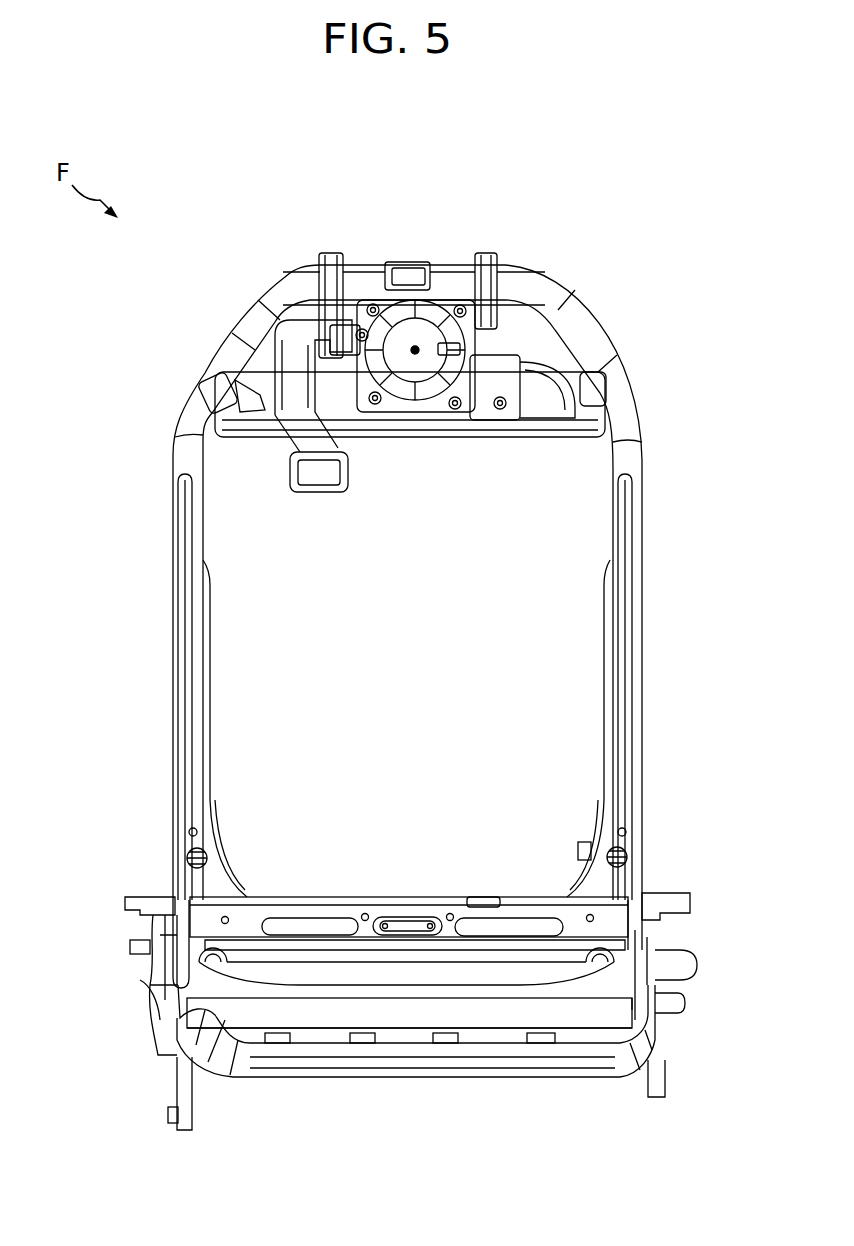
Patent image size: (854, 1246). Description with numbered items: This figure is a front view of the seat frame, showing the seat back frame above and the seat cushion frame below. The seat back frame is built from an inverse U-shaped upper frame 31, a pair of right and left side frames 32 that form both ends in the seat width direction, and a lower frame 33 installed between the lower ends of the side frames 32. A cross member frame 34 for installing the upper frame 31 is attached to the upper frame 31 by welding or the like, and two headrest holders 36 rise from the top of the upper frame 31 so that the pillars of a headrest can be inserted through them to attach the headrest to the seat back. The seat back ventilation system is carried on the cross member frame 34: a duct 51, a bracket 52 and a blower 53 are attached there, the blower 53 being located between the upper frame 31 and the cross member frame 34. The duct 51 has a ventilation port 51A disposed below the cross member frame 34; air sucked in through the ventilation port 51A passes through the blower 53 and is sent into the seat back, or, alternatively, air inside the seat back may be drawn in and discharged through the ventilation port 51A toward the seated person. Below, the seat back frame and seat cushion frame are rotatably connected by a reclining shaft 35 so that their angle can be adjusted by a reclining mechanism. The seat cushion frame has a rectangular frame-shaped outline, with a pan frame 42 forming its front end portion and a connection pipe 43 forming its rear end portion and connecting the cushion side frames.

The upper frame 31 is at (583, 335).
The side frames 32 is at (185, 563).
The lower frame 33 is at (607, 915).
The cross member frame 34 is at (600, 390).
The reclining shaft 35 is at (500, 950).
The headrest holder 36 is at (333, 254).
The pan frame 42 is at (264, 1080).
The connection pipe 43 is at (325, 1080).
The duct 51 is at (290, 375).
The ventilation port 51A is at (300, 465).
The bracket 52 is at (503, 360).
The blower 53 is at (418, 330).